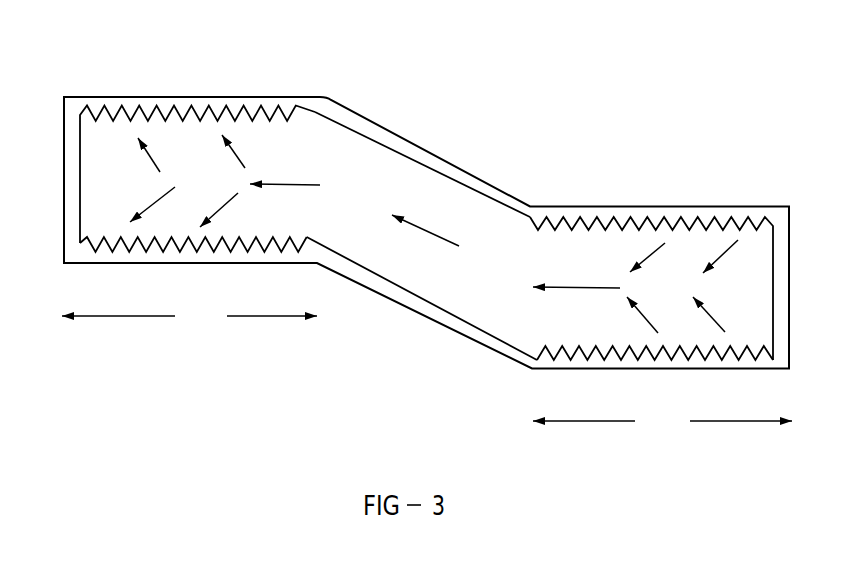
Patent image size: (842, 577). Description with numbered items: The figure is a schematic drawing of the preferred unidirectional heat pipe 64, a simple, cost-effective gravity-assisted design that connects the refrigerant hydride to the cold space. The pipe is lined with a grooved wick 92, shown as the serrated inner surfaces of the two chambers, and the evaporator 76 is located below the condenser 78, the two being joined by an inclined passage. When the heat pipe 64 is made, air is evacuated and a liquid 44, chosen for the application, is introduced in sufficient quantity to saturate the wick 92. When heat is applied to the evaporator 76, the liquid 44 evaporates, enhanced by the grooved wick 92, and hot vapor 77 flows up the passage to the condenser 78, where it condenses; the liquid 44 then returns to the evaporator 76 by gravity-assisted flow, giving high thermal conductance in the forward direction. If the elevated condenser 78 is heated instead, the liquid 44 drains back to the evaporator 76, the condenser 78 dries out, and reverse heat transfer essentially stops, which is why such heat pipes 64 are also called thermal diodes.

The unidirectional heat pipe 64 is at (153, 98).
The liquid 44 is at (523, 354).
The hot vapor 77 is at (425, 227).
The grooved wick 92 is at (588, 220).
The condenser 78 is at (189, 316).
The evaporator 76 is at (662, 422).